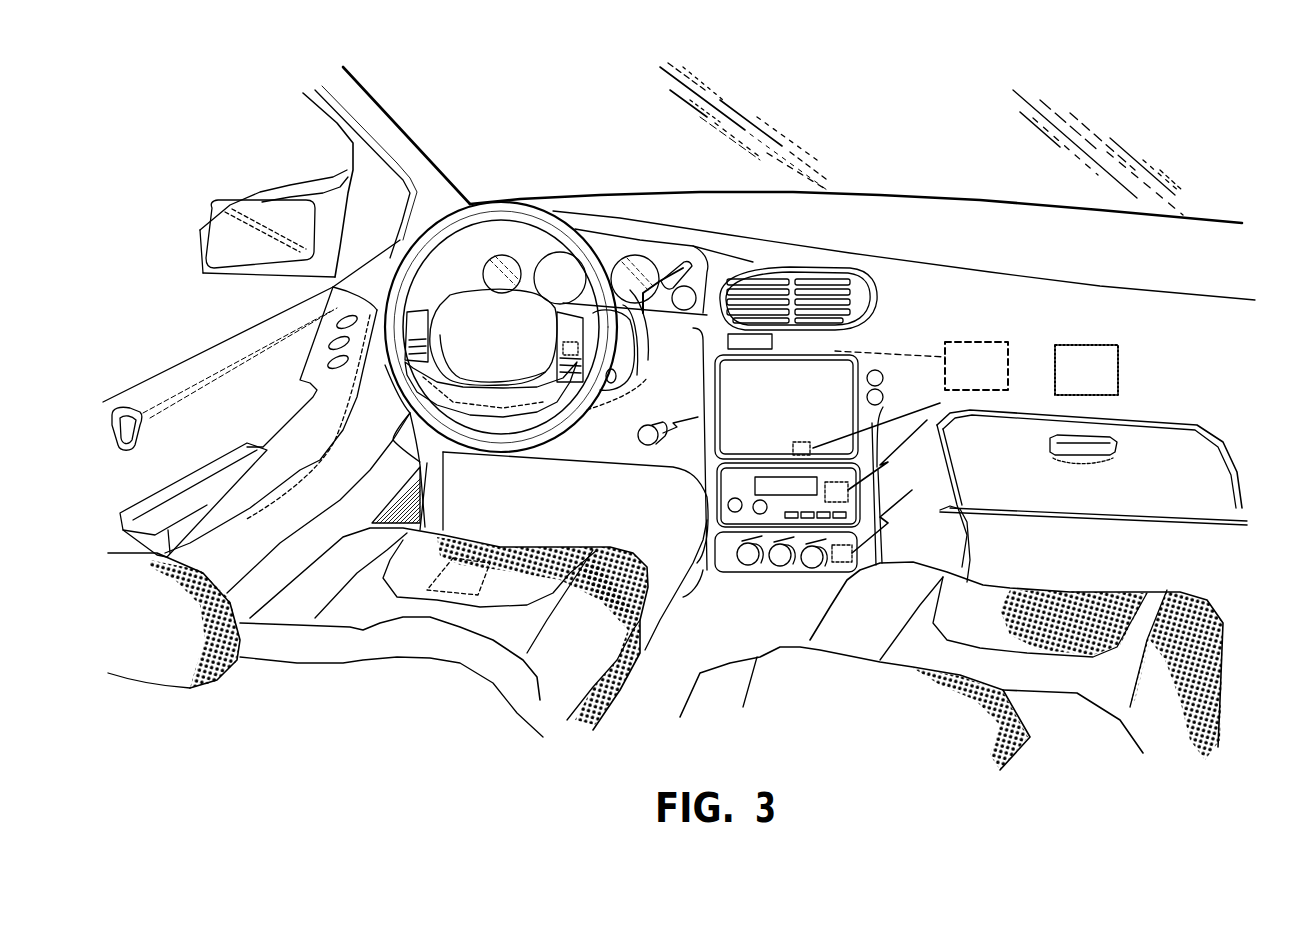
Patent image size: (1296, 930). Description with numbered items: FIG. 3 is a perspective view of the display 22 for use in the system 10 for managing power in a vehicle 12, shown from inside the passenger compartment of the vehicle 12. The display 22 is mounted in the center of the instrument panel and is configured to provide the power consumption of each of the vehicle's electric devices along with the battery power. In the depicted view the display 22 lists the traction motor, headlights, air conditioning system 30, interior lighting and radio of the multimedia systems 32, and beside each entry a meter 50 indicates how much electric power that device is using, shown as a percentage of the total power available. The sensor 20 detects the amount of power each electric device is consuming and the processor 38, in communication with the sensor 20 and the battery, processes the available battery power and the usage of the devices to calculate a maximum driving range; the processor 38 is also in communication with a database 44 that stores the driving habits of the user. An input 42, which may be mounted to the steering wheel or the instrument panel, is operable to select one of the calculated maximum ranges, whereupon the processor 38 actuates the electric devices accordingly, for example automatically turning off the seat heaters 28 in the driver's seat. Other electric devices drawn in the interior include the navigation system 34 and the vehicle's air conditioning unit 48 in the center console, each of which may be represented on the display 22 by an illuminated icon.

The system 10 is at (850, 124).
The vehicle 12 is at (308, 181).
The sensor 20 is at (1098, 379).
The display 22 is at (827, 379).
The seat heaters 28 is at (470, 588).
The air conditioning system 30 is at (858, 280).
The multimedia systems 32 is at (887, 481).
The navigation system 34 is at (793, 445).
The processor 38 is at (988, 378).
The input 42 is at (557, 343).
The database 44 is at (541, 327).
The air conditioning unit 48 is at (858, 550).
The meter 50 is at (905, 357).